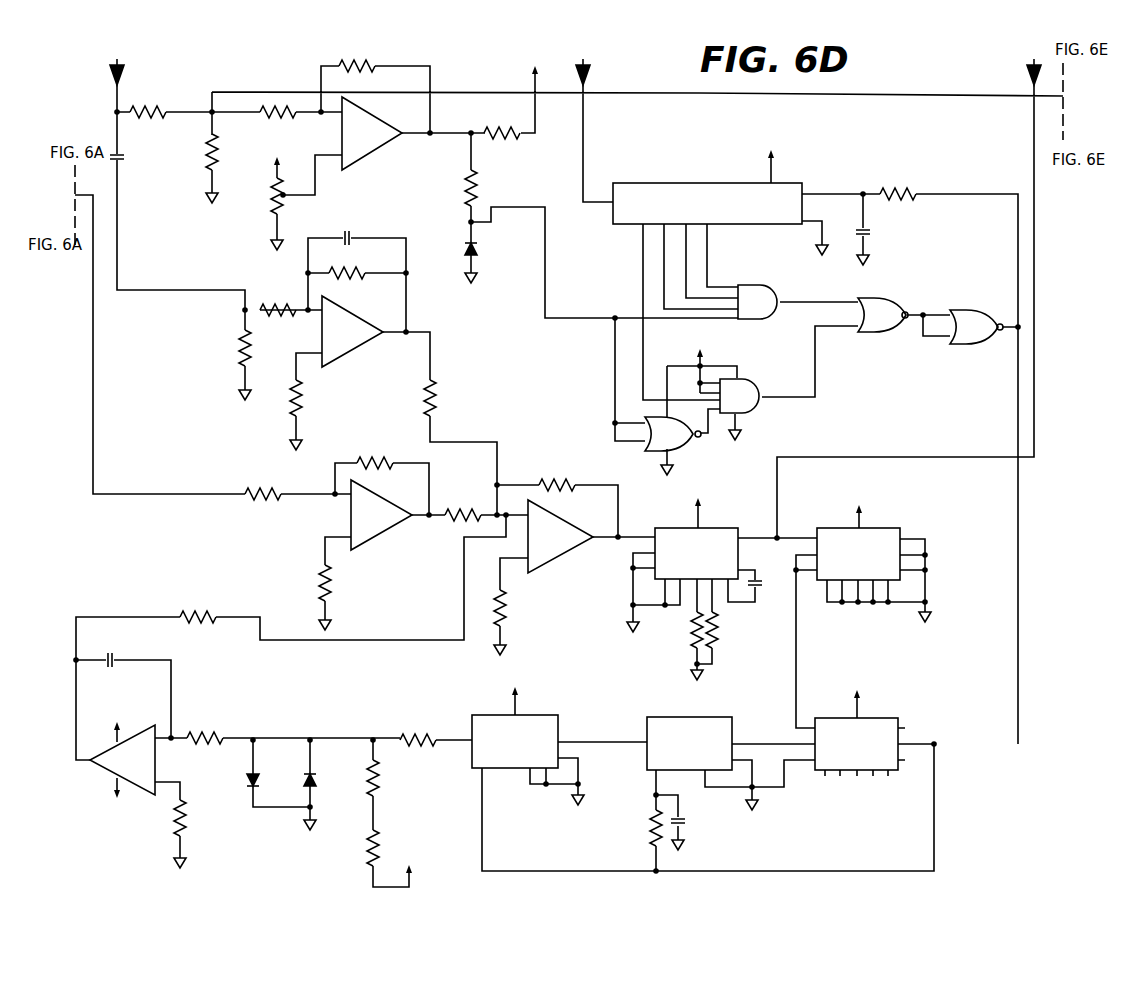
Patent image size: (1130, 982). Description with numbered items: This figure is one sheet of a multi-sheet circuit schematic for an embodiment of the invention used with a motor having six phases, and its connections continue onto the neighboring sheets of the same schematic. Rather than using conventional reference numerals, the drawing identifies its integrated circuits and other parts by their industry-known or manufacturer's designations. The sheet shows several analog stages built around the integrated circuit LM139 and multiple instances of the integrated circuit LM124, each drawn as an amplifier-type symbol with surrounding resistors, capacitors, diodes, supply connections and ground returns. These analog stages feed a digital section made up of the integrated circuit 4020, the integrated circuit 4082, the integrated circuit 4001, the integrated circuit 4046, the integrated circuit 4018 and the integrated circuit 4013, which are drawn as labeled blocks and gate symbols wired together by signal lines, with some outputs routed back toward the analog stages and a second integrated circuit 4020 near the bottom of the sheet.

The integrated circuit LM139 is at (362, 144).
The integrated circuit LM124 is at (340, 348).
The integrated circuit 4020 is at (755, 476).
The integrated circuit 4082 is at (752, 402).
The integrated circuit 4001 is at (976, 318).
The integrated circuit 4046 is at (696, 553).
The integrated circuit 4018 is at (858, 554).
The integrated circuit 4013 is at (602, 742).